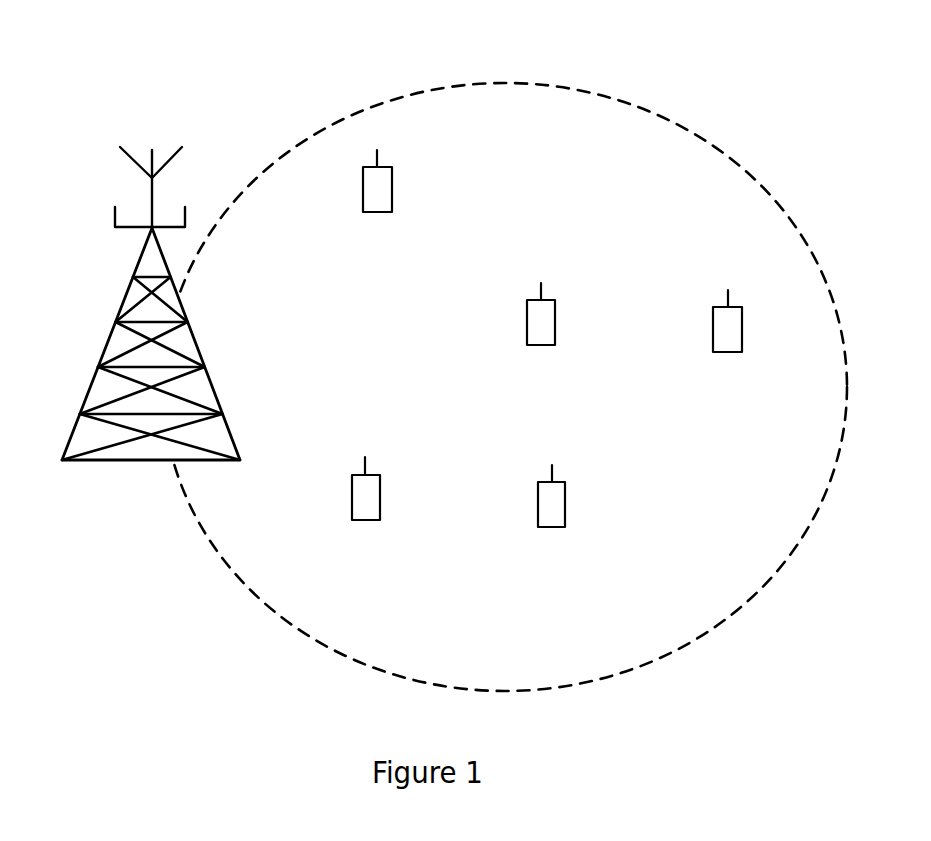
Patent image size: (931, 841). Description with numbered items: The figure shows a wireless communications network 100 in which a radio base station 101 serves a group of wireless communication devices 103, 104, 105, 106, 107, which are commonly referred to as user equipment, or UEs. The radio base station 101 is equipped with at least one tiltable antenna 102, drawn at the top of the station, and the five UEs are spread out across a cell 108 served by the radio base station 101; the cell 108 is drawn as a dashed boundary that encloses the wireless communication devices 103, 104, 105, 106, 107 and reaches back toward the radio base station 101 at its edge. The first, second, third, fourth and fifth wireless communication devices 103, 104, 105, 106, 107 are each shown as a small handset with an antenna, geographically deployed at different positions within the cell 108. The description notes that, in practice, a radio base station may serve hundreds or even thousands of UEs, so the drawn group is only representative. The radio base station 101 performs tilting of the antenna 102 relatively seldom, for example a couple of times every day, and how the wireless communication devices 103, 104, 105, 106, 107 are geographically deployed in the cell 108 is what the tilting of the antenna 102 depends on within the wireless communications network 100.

The wireless communications network 100 is at (740, 70).
The radio base station 101 is at (86, 312).
The tiltable antenna 102 is at (131, 158).
The wireless communication device 103 is at (380, 495).
The wireless communication device 104 is at (392, 187).
The wireless communication device 105 is at (555, 320).
The wireless communication device 106 is at (742, 327).
The wireless communication device 107 is at (565, 502).
The cell 108 is at (296, 587).